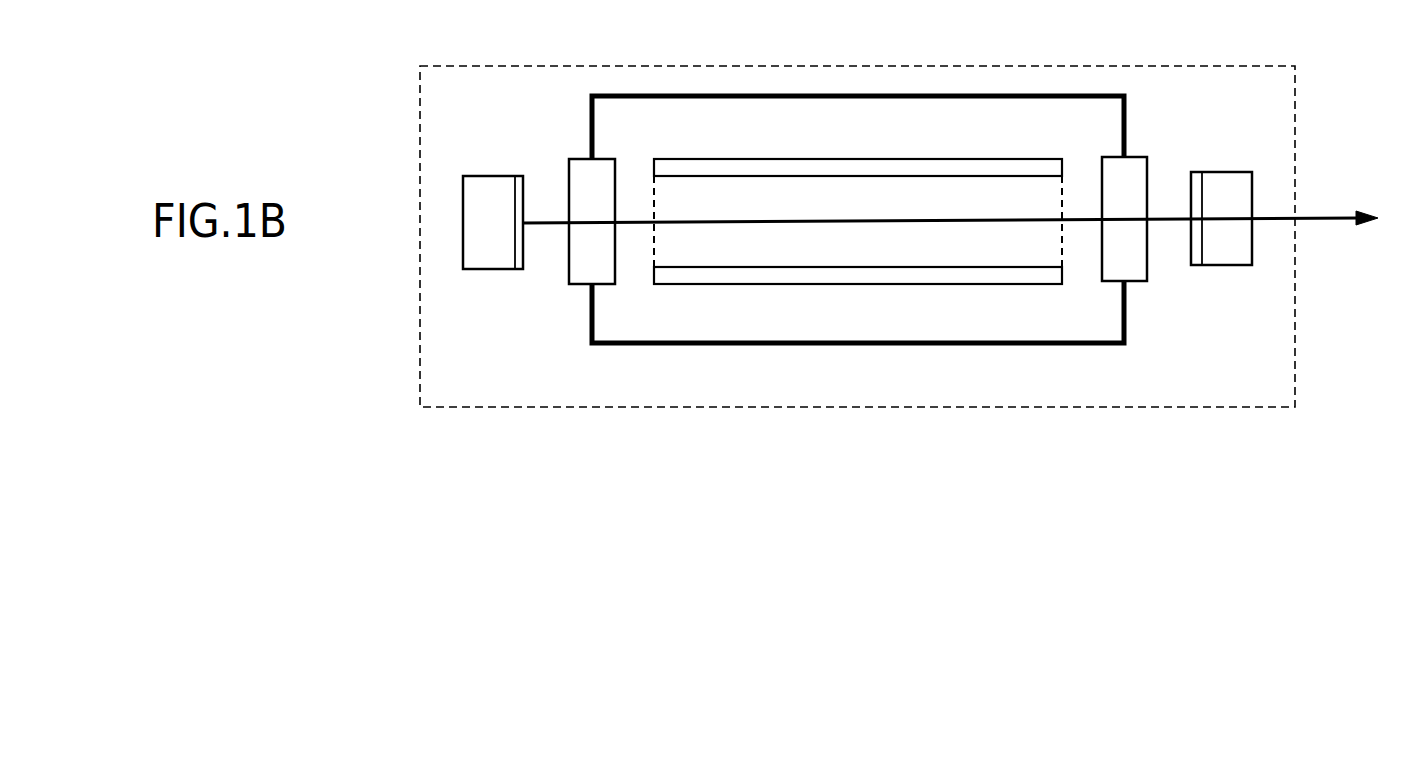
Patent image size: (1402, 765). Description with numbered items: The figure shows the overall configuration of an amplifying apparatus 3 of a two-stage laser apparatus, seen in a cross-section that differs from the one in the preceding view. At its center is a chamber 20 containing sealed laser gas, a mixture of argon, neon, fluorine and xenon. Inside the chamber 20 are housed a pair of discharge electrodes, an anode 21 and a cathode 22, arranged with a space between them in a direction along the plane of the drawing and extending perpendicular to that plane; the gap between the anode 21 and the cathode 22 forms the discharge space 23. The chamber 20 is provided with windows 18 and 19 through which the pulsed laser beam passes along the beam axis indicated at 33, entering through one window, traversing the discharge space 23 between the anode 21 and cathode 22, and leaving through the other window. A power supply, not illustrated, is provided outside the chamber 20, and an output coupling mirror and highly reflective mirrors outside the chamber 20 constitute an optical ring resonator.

The amplifying apparatus 3 is at (533, 66).
The window 18 is at (1147, 165).
The window 19 is at (569, 276).
The chamber 20 is at (854, 346).
The anode 21 is at (971, 158).
The cathode 22 is at (745, 285).
The discharge space 23 is at (935, 252).
The ion beam axis / direction of travel 33 is at (1330, 217).